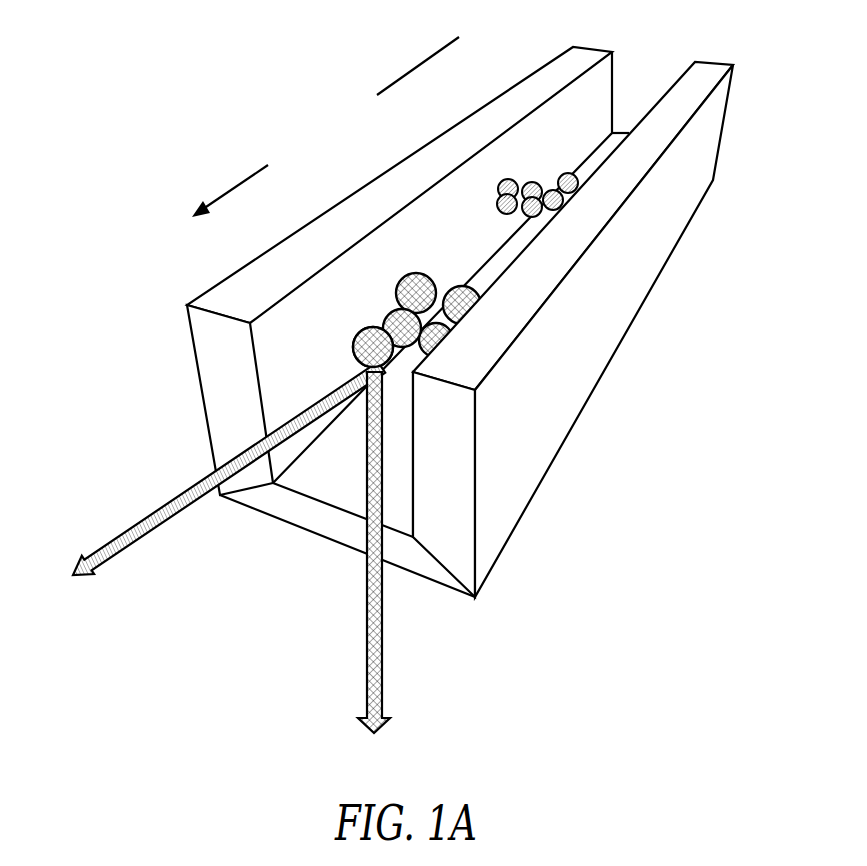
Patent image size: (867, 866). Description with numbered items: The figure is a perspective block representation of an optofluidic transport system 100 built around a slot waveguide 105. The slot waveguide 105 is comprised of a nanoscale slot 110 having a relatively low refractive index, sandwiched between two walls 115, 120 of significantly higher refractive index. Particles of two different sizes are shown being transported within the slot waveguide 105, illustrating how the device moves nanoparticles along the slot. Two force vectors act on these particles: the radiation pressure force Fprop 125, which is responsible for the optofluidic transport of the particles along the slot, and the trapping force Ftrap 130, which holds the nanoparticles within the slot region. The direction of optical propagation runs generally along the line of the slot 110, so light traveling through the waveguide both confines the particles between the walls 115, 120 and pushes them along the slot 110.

The optofluidic transport system 100 is at (224, 49).
The slot waveguide 105 is at (620, 310).
The nanoscale slot 110 is at (636, 76).
The wall 115 is at (561, 69).
The wall 120 is at (708, 70).
The radiation pressure force Fprop 125 is at (162, 507).
The trapping force Ftrap 130 is at (366, 617).